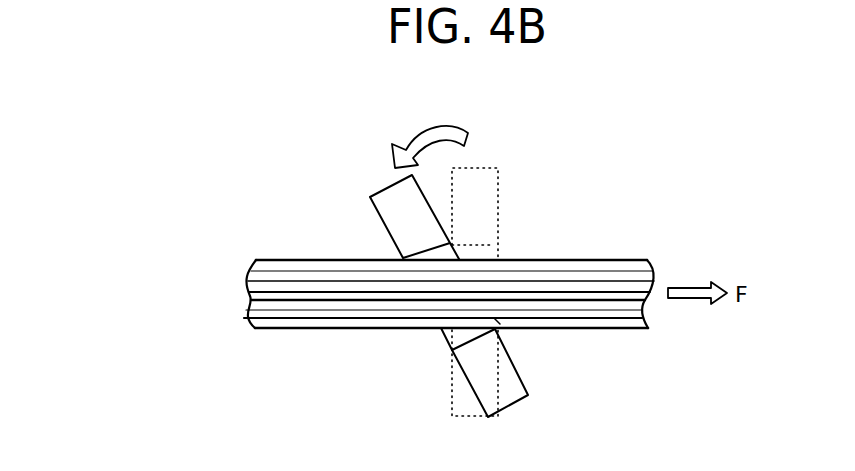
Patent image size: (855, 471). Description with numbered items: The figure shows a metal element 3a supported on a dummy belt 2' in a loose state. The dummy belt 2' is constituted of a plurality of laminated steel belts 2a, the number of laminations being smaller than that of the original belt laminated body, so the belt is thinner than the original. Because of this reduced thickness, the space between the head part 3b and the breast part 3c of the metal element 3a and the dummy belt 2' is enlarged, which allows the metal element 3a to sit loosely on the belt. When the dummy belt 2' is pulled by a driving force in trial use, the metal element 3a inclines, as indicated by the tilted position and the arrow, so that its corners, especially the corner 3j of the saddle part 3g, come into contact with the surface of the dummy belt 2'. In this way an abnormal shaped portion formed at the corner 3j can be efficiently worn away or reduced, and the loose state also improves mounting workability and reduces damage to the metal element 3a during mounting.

The dummy belt 2' is at (347, 283).
The steel belt 2a is at (258, 271).
The metal element 3a is at (373, 167).
The head part 3b is at (388, 213).
The breast part 3c is at (475, 365).
The saddle part 3g is at (460, 348).
The corner 3j is at (497, 320).